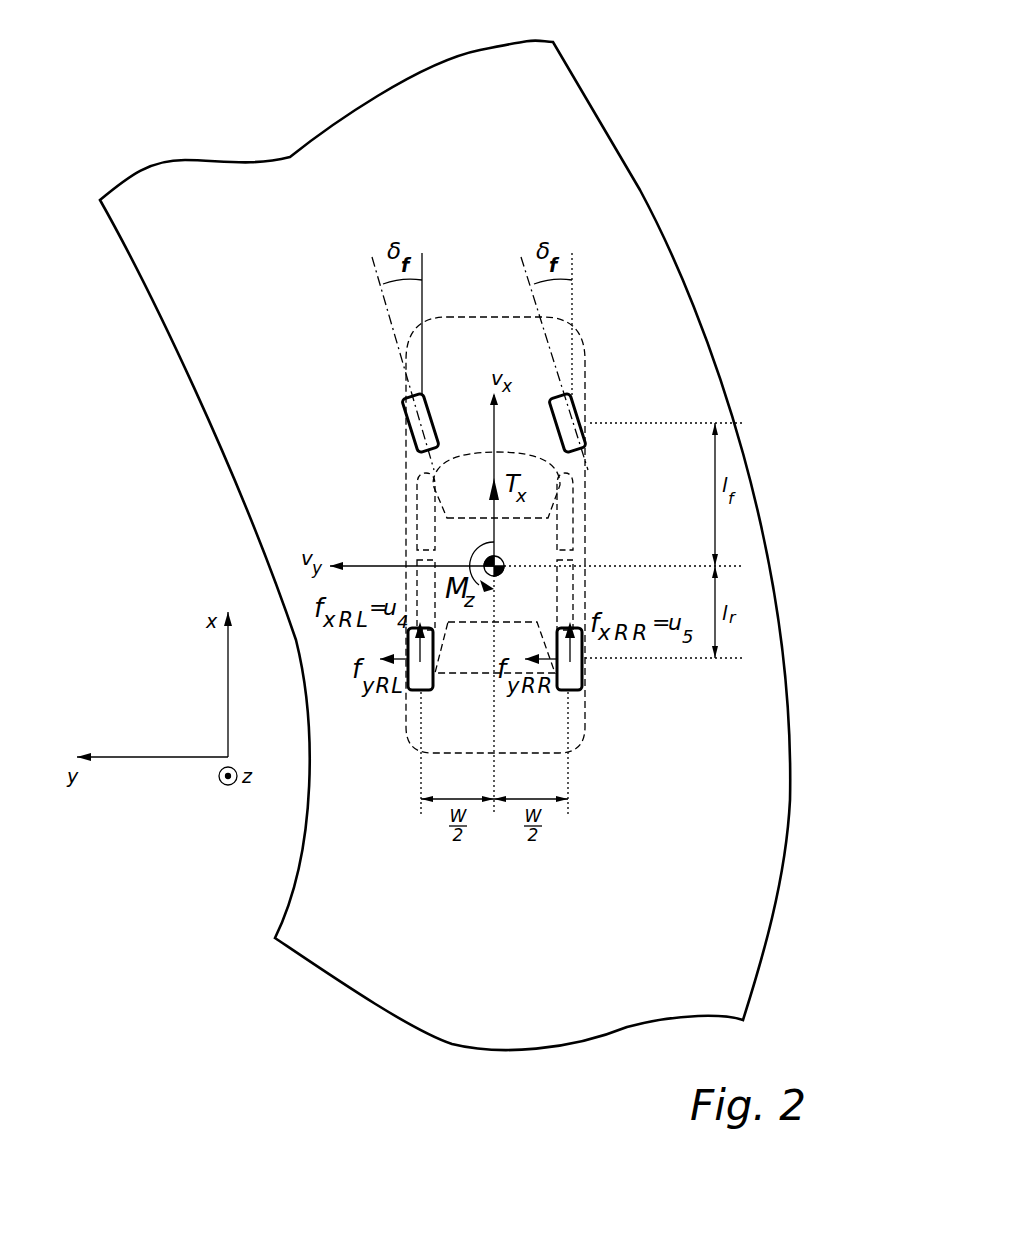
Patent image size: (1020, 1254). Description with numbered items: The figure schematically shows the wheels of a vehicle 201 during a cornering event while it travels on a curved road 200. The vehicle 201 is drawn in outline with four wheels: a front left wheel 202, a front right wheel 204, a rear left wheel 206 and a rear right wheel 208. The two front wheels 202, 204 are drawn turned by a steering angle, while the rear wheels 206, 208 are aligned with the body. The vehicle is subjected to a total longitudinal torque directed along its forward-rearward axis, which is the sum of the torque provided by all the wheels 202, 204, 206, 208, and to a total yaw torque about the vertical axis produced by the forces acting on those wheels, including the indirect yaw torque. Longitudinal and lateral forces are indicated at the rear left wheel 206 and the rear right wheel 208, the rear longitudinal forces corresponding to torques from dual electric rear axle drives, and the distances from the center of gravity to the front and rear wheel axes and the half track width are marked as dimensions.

The road 200 is at (590, 152).
The vehicle 201 is at (498, 317).
The front left wheel 202 is at (403, 412).
The front right wheel 204 is at (582, 410).
The rear left wheel 206 is at (417, 692).
The rear right wheel 208 is at (583, 675).